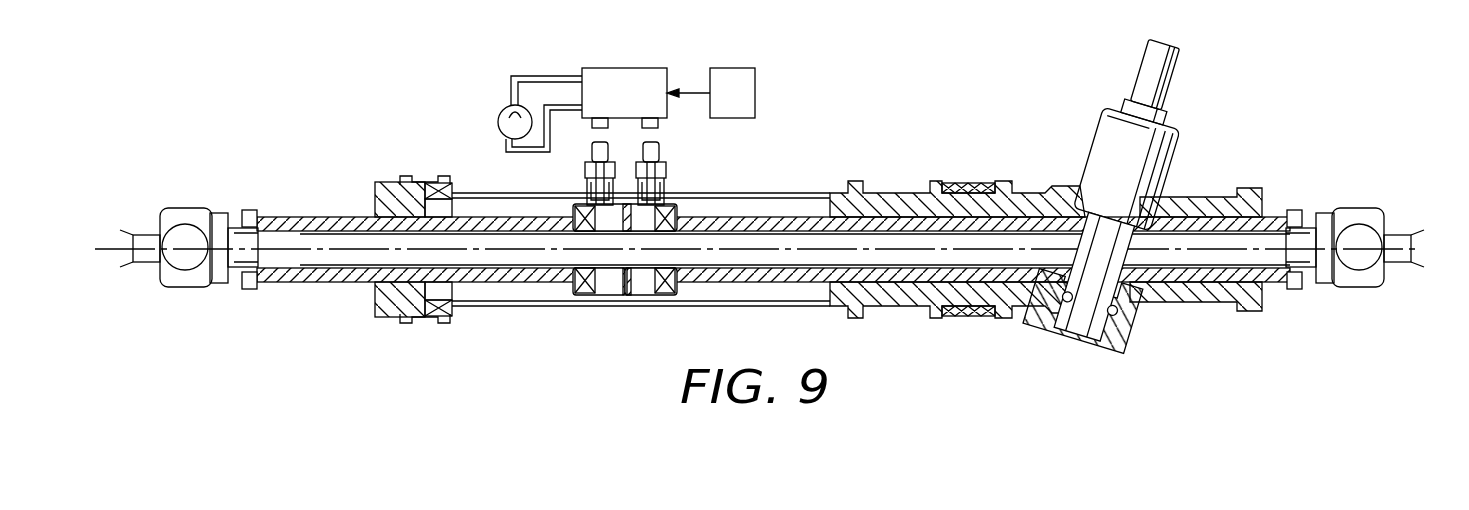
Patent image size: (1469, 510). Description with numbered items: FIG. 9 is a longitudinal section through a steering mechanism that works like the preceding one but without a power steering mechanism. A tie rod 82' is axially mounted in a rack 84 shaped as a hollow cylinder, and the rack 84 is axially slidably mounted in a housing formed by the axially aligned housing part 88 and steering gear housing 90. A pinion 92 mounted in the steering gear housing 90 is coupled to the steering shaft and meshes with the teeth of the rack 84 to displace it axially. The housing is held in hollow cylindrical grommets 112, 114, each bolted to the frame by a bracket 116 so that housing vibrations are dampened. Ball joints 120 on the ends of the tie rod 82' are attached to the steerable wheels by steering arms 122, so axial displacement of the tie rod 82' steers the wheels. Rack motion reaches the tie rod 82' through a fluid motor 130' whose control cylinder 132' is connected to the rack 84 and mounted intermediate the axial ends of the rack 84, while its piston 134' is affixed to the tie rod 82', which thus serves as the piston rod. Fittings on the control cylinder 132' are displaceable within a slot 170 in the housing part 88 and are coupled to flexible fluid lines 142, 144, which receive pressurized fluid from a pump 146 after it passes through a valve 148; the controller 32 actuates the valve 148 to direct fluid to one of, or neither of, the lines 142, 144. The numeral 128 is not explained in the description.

The controller 32 is at (738, 72).
The tie rod 82' is at (772, 277).
The rack 84 is at (1220, 278).
The housing part 88 is at (490, 307).
The steering gear housing 90 is at (888, 313).
The pinion 92 is at (1095, 283).
The grommet 112 is at (421, 182).
The grommet 114 is at (973, 190).
The bracket 116 is at (967, 311).
The ball joint 120 is at (1360, 285).
The steering arm 122 is at (145, 236).
The ball joint 128 is at (178, 288).
The fluid motor 130' is at (582, 320).
The control cylinder 132' is at (651, 320).
The piston 134' is at (656, 194).
The flexible fluid line 142 is at (590, 147).
The flexible fluid line 144 is at (658, 146).
The pump 146 is at (500, 117).
The valve 148 is at (627, 72).
The slot 170 is at (790, 197).